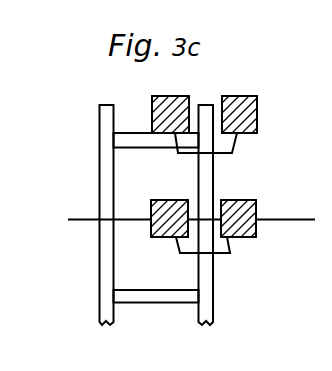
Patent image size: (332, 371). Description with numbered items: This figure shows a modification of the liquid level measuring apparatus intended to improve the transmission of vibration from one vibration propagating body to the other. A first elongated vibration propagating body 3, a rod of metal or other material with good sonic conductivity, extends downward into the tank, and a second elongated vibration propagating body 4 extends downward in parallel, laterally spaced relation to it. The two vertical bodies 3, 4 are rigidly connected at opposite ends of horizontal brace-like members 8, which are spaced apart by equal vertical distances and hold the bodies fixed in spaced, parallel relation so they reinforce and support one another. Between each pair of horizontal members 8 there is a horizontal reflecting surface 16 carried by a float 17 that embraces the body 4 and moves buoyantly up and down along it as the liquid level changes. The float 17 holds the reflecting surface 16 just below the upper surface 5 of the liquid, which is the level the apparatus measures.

The first elongated vibration propagating body 3 is at (107, 119).
The other elongated vibration propagating body 4 is at (207, 178).
The upper surface of the liquid 5 is at (73, 218).
The horizontal brace-like members 8 is at (133, 141).
The horizontal reflecting surface 16 is at (234, 146).
The float 17 is at (255, 102).